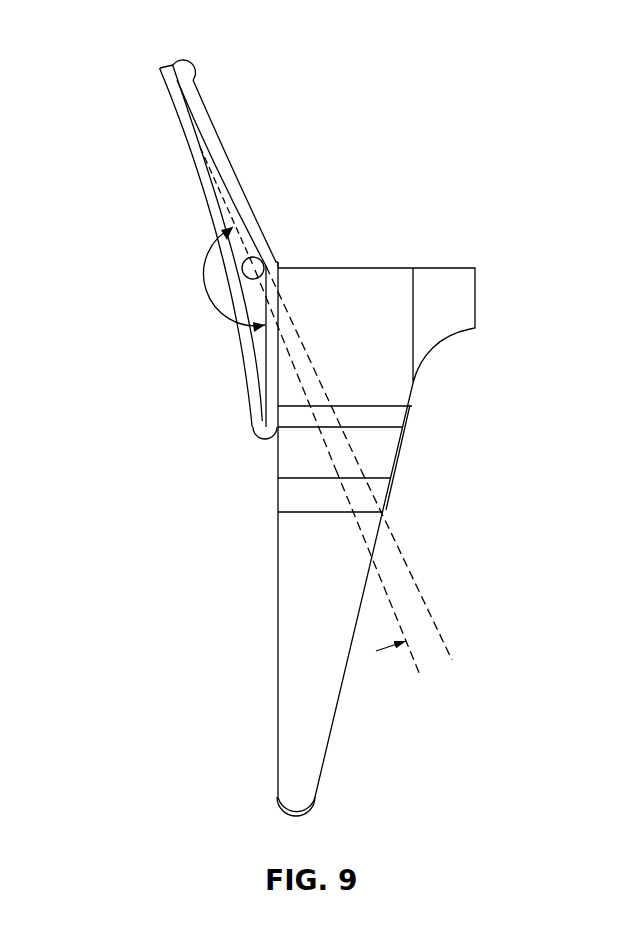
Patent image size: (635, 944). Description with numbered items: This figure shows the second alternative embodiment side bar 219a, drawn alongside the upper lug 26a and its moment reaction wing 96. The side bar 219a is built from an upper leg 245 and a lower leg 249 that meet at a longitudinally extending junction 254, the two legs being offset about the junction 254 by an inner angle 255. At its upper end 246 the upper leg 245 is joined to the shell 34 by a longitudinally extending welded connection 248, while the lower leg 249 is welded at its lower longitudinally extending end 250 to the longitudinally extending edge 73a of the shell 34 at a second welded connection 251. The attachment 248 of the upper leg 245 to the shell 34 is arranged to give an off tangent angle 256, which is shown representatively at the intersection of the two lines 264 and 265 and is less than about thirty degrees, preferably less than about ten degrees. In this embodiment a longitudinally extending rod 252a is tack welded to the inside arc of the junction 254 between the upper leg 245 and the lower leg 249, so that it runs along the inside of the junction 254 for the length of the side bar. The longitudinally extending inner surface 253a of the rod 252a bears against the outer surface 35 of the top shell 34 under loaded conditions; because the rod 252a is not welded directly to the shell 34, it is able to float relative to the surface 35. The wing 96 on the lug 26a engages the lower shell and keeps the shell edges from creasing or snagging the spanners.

The side bar 219a is at (380, 125).
The body 26a is at (415, 258).
The moment reaction wing 96 is at (302, 799).
The upper leg 245 is at (228, 173).
The upper end 246 is at (192, 93).
The welded connection 248 is at (173, 68).
The shell 34 is at (175, 85).
The outer surface 35 is at (228, 207).
The junction 254 is at (280, 263).
The inner surface 253a is at (170, 246).
The inner angle 255 is at (208, 279).
The rod 252a is at (190, 247).
The edge 73a is at (191, 345).
The welded connection 251 is at (208, 463).
The lower leg 249 is at (270, 347).
The lower end 250 is at (270, 422).
The line 264 is at (390, 605).
The line 265 is at (425, 600).
The off tangent angle 256 is at (470, 619).